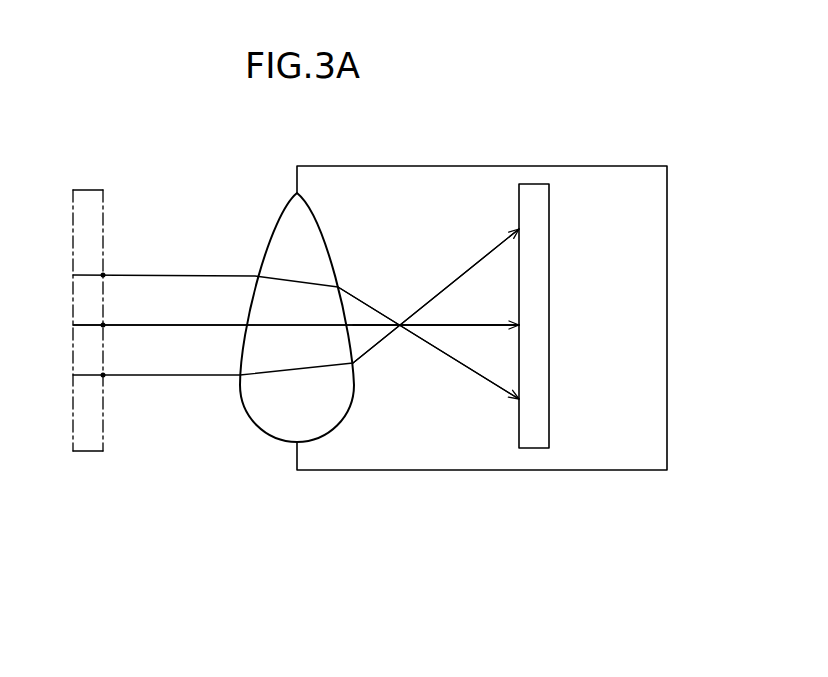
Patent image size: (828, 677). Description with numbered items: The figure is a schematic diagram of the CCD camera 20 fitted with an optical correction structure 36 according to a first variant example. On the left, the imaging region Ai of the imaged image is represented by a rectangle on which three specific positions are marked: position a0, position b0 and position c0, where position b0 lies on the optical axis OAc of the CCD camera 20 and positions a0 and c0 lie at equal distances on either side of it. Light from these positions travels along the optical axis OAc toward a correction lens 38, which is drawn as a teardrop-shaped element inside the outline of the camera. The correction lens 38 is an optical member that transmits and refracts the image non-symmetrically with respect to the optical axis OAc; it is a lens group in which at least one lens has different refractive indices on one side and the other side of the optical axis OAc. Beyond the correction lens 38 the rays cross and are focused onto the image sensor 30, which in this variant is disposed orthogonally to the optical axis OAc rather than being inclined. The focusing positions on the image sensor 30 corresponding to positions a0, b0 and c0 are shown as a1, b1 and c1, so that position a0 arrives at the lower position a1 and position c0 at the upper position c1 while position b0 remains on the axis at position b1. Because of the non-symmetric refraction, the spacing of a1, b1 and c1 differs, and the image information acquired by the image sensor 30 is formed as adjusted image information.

The CCD camera 20 is at (448, 321).
The image sensor 30 is at (543, 300).
The optical correction structure 36 is at (475, 443).
The correction lens 38 is at (260, 430).
The imaging region Ai is at (85, 452).
The optical axis OAc is at (223, 325).
The position a0 is at (103, 275).
The position b0 is at (103, 325).
The position c0 is at (103, 375).
The focusing position a1 is at (518, 403).
The focusing position b1 is at (518, 325).
The focusing position c1 is at (518, 233).